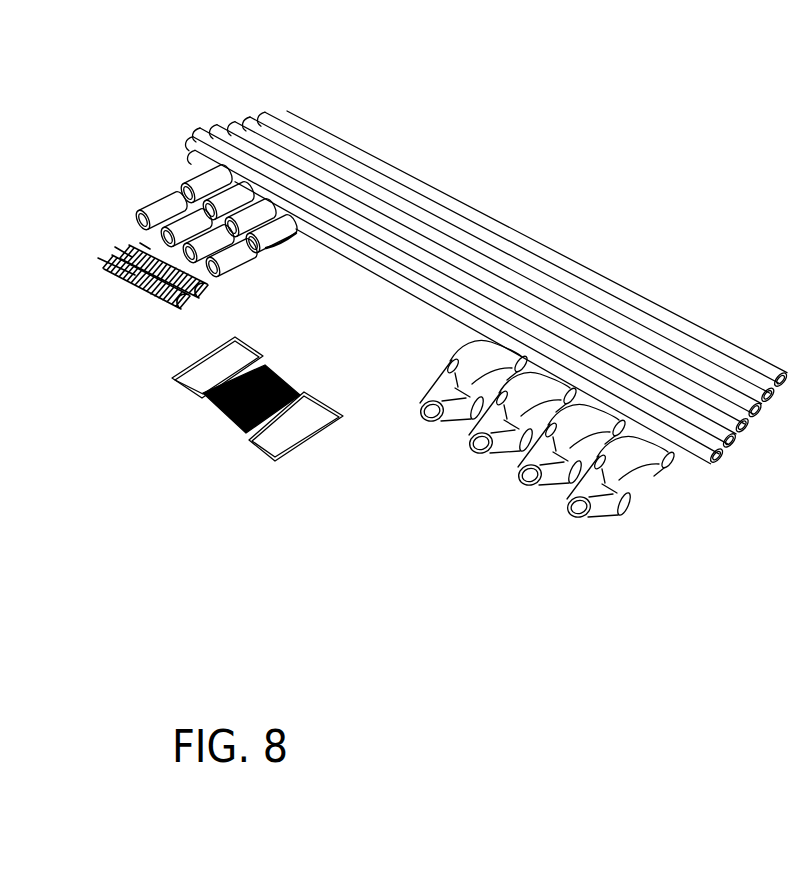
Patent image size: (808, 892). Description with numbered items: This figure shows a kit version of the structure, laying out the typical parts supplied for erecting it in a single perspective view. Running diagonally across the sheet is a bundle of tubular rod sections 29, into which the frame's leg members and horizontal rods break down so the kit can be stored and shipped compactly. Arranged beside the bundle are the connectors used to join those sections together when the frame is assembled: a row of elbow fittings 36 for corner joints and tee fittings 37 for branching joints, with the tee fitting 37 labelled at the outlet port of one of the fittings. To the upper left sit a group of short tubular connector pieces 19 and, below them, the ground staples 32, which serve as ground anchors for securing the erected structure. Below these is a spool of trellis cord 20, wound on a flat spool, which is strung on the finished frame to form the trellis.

The cylindrical connectors 19 is at (168, 196).
The tubular rod section 29 is at (378, 163).
The ground staples 32 is at (135, 280).
The trellis cords 20 is at (241, 428).
The elbow fitting 36 is at (553, 477).
The tee fitting 37 is at (655, 465).